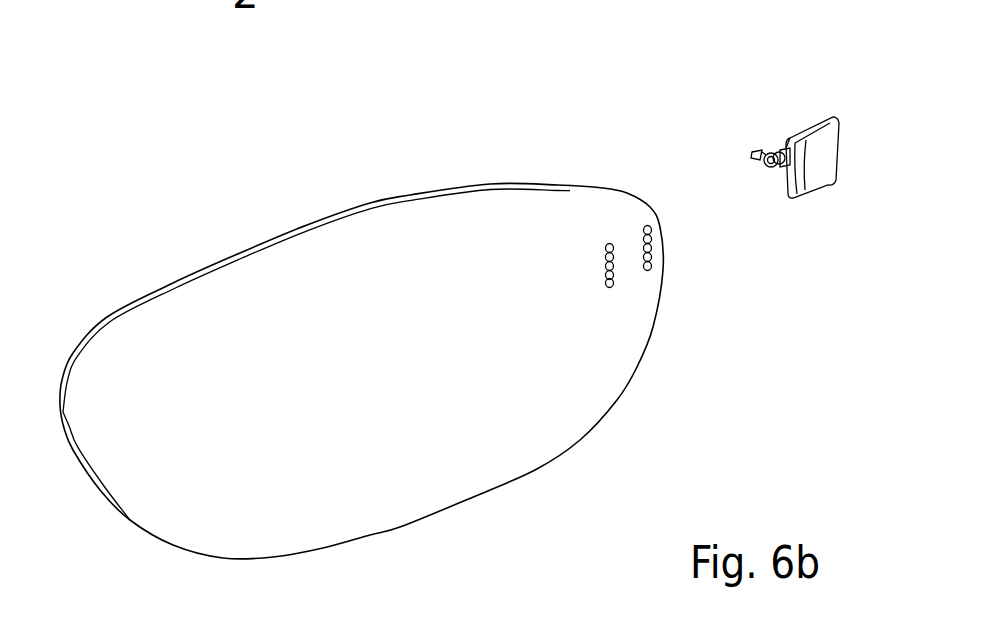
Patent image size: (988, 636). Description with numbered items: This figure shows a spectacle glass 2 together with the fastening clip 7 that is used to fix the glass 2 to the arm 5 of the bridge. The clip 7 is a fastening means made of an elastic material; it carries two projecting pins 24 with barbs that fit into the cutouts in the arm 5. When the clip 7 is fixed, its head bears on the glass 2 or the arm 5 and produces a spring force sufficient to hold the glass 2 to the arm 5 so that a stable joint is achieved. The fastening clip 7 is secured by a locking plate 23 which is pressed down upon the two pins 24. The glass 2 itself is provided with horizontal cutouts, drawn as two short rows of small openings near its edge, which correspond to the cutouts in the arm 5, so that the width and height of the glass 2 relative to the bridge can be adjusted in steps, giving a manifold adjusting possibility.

The glass 2 is at (417, 495).
The arm 5 is at (188, 0).
The fastening clip 7 is at (818, 163).
The locking plate 23 is at (787, 143).
The projecting pins 24 is at (757, 153).